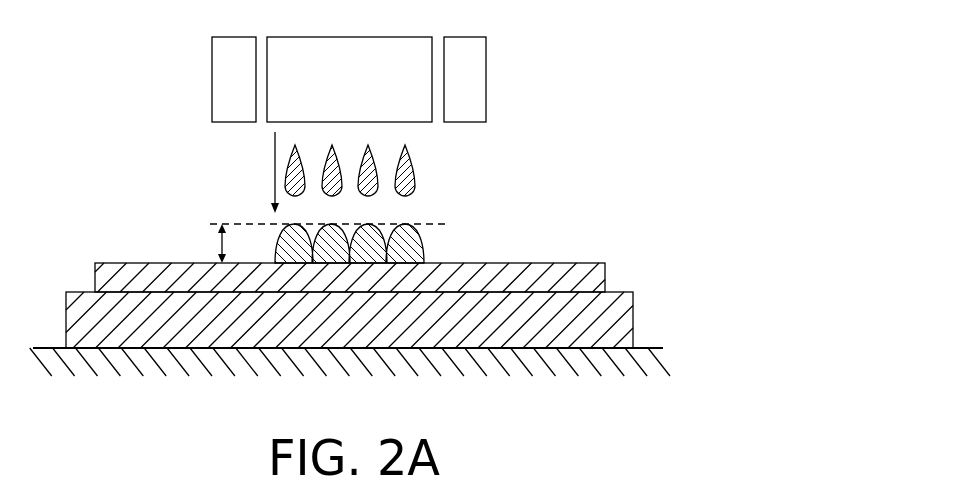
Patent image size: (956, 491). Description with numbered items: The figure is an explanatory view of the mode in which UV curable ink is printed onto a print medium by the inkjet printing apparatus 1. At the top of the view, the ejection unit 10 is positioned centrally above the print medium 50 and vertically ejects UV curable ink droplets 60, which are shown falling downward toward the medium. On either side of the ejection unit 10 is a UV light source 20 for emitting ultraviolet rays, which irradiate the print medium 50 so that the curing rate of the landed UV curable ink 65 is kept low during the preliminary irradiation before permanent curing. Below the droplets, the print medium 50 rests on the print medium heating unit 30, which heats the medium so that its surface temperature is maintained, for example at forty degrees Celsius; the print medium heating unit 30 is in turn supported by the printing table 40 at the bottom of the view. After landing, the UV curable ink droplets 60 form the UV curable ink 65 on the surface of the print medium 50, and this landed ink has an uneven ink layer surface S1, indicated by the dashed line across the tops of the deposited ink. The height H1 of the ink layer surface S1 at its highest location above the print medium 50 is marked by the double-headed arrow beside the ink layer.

The inkjet printing apparatus 1 is at (522, 61).
The ejection unit 10 is at (364, 91).
The UV light source 20 is at (221, 102).
The print medium heating unit 30 is at (633, 293).
The printing table 40 is at (557, 378).
The print medium 50 is at (542, 266).
The UV curable ink droplets 60 is at (412, 160).
The UV curable ink 65 is at (423, 222).
The ink layer surface S1 is at (243, 222).
The height H1 is at (203, 243).